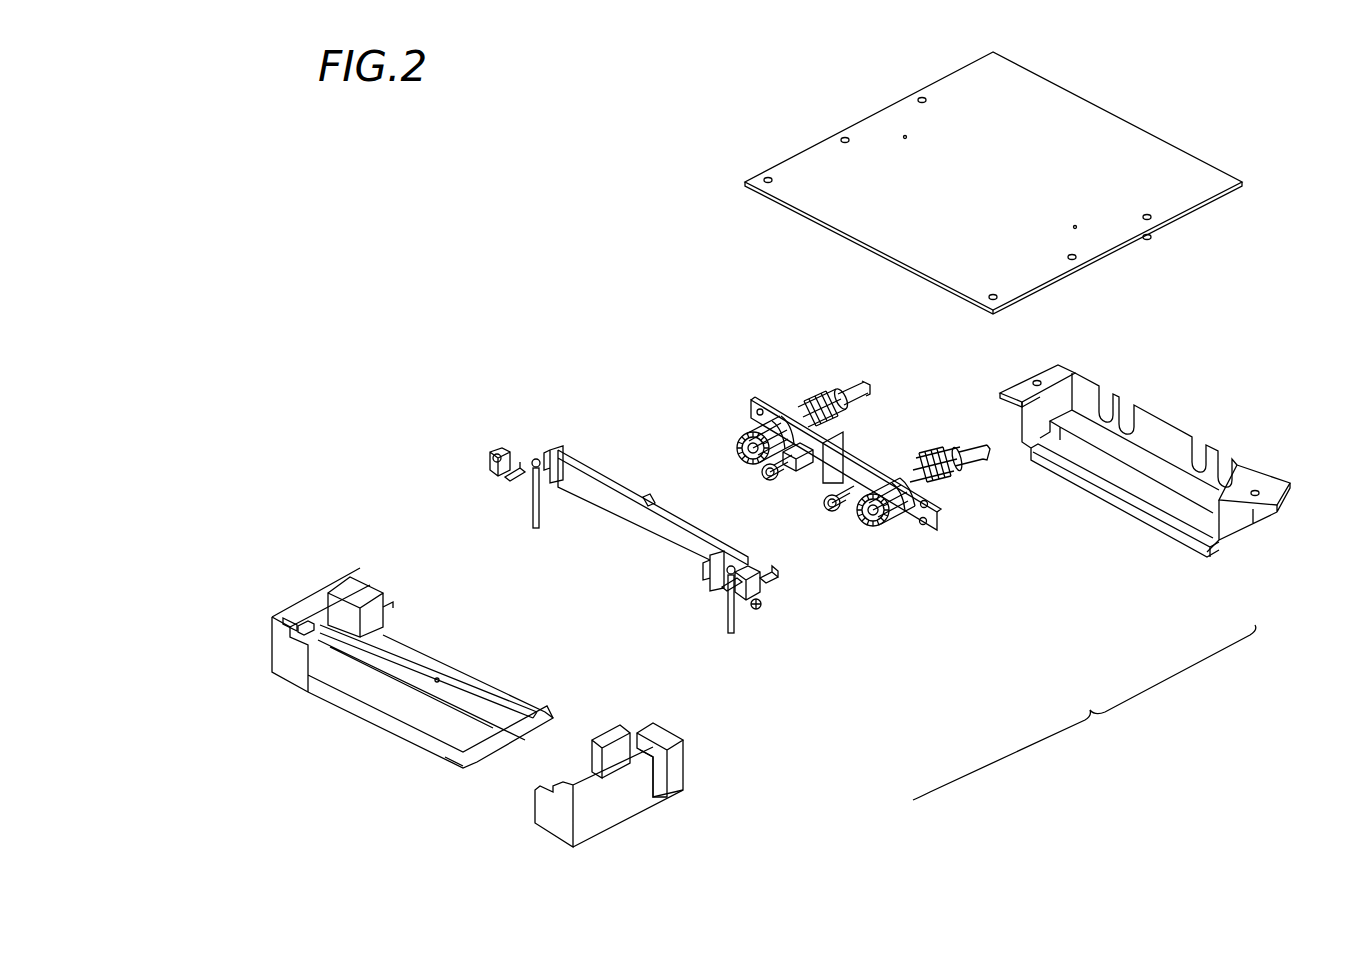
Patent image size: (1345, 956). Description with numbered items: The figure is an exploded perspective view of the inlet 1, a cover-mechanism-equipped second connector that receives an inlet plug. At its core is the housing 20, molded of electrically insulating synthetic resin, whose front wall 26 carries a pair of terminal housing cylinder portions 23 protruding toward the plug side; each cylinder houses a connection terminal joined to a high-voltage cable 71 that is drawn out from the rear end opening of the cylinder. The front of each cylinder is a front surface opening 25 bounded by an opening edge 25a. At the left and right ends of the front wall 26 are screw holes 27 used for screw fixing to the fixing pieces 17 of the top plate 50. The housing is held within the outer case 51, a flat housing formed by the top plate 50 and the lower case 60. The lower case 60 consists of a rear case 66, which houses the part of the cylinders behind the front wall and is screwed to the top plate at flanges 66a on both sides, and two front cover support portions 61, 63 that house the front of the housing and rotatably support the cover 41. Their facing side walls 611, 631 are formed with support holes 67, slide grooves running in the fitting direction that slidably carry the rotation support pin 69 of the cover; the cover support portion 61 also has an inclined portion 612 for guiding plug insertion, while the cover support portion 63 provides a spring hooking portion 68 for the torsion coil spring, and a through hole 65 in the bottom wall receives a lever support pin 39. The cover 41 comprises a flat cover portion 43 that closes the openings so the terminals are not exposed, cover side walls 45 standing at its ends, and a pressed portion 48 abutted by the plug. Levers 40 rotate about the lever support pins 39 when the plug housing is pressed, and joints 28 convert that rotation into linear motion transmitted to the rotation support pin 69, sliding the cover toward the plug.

The inlet 1 is at (628, 260).
The fixing pieces 17 is at (1147, 240).
The housing 20 is at (842, 475).
The terminal housing cylinder portions 23 is at (789, 510).
The front surface opening 25 is at (750, 473).
The opening edges 25a is at (733, 447).
The front wall 26 is at (810, 483).
The screw holes 27 is at (750, 407).
The joint 28 is at (505, 478).
The lever support pins 39 is at (518, 514).
The levers 40 is at (548, 483).
The cover 41 is at (653, 516).
The cover portion 43 is at (655, 525).
The cover side walls 45 is at (767, 576).
The pressed portion 48 is at (492, 462).
The top plate 50 is at (788, 189).
The outer case 51 is at (364, 297).
The lower case 60 is at (795, 574).
The cover support portion 61 is at (547, 717).
The cover support portion 63 is at (732, 785).
The through hole 65 is at (399, 655).
The rear case 66 is at (1162, 476).
The flanges 66a is at (1052, 367).
The support holes 67 is at (283, 618).
The spring hooking portion 68 is at (305, 623).
The rotation support pin 69 is at (760, 607).
The high-voltage cable 71 is at (860, 390).
The side wall 611 is at (318, 600).
The inclined portion 612 is at (450, 757).
The side wall 631 is at (640, 797).